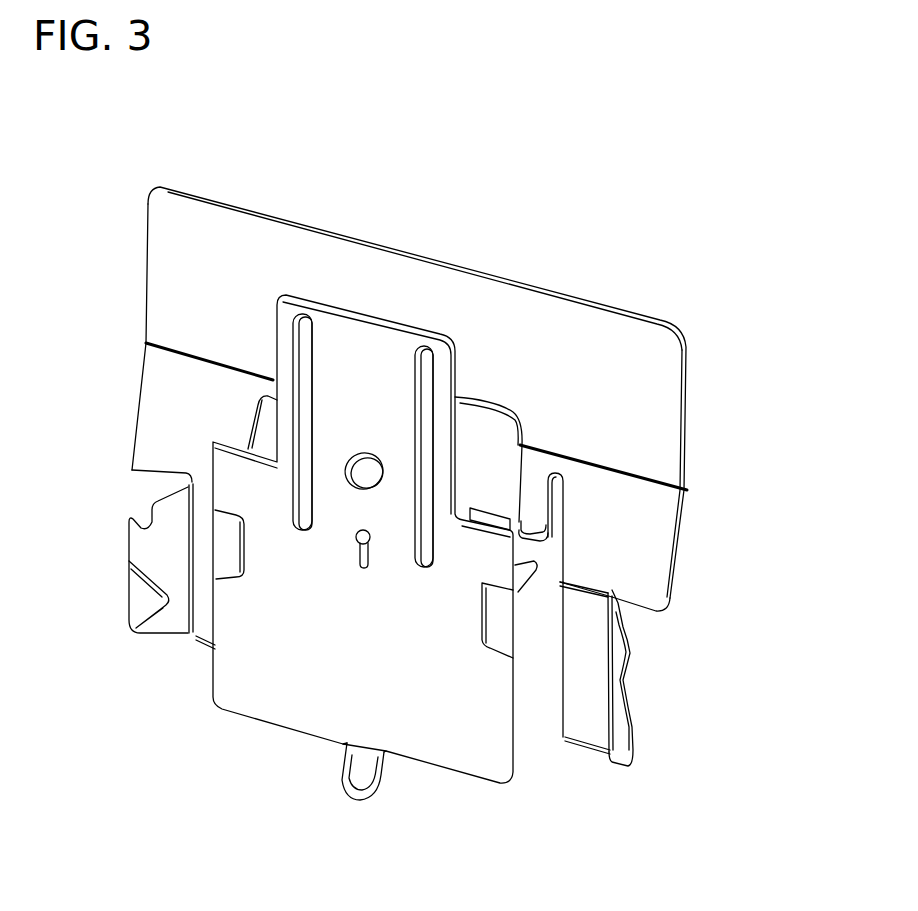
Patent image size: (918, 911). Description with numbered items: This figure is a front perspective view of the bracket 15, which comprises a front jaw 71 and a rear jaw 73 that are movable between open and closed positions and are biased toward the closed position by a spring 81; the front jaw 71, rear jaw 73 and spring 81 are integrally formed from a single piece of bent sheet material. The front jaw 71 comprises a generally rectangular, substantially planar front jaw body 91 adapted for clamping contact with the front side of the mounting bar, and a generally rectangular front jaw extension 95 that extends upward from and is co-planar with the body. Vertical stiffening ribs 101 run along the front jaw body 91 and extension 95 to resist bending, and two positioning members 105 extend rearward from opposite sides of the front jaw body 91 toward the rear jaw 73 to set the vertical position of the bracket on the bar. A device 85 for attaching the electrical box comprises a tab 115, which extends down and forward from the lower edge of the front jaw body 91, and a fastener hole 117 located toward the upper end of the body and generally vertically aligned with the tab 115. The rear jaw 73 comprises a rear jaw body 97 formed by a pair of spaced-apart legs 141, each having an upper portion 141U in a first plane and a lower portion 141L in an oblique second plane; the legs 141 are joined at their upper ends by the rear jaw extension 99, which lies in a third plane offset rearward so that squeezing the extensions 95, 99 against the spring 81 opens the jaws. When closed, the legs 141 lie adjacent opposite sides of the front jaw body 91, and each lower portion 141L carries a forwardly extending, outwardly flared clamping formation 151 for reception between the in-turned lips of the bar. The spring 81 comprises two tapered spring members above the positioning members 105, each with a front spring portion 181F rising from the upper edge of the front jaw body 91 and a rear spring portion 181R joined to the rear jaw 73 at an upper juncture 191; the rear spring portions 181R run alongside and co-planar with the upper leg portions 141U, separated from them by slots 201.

The bracket 15 is at (705, 362).
The front jaw 71 is at (220, 698).
The rear jaw 73 is at (208, 195).
The spring 81 is at (560, 512).
The device for attachment 85 is at (332, 757).
The front jaw body 91 is at (458, 747).
The front jaw extension 95 is at (370, 321).
The rear jaw body 97 is at (675, 599).
The rear jaw extension 99 is at (532, 292).
The vertical stiffening ribs 101 is at (298, 353).
The positioning member 105 is at (537, 533).
The tab 115 is at (350, 790).
The fastener hole 117 is at (355, 543).
The legs 141 is at (167, 407).
The upper portions of legs 141U is at (627, 519).
The lower portions of legs 141L is at (588, 685).
The clamping formation 151 is at (157, 557).
The rear spring portion 181R is at (553, 490).
The front spring portion 181F is at (543, 560).
The upper juncture 191 is at (557, 468).
The slots 201 is at (267, 410).